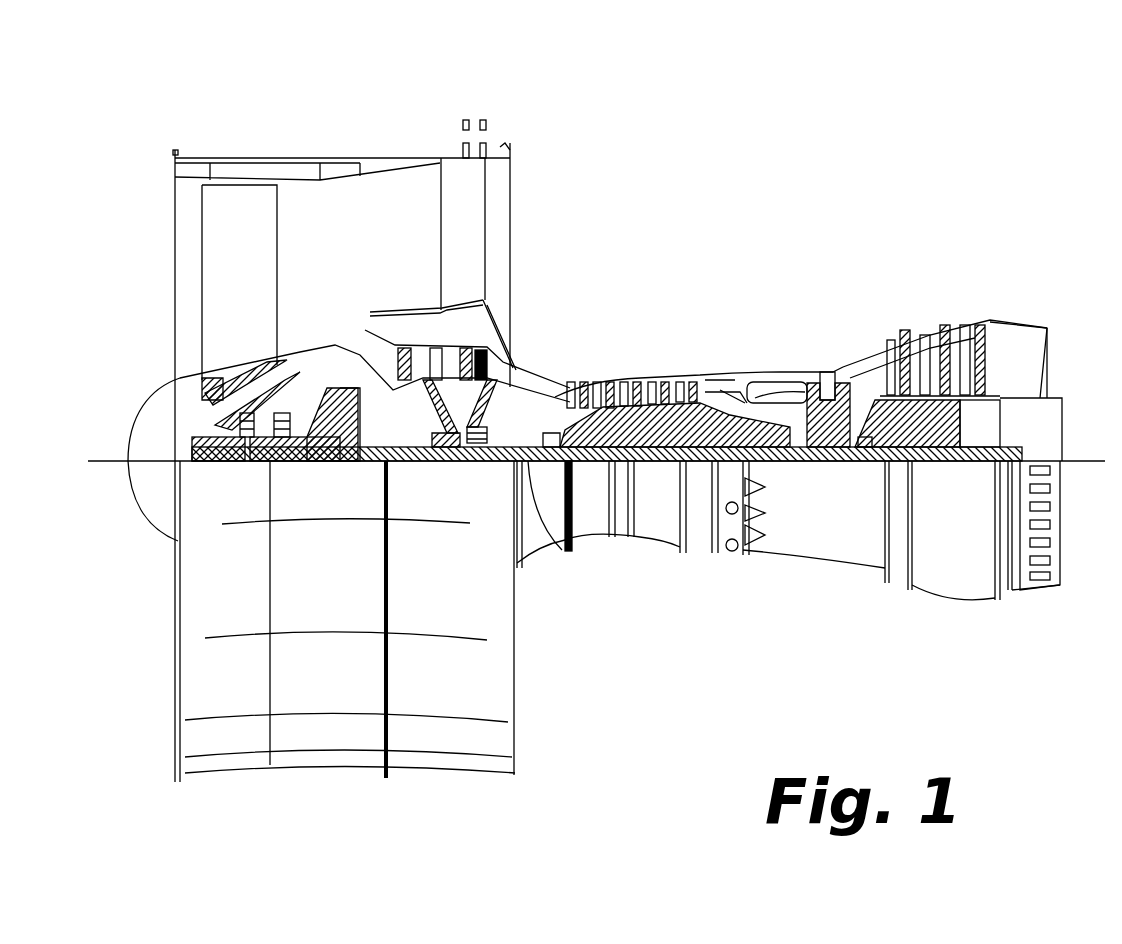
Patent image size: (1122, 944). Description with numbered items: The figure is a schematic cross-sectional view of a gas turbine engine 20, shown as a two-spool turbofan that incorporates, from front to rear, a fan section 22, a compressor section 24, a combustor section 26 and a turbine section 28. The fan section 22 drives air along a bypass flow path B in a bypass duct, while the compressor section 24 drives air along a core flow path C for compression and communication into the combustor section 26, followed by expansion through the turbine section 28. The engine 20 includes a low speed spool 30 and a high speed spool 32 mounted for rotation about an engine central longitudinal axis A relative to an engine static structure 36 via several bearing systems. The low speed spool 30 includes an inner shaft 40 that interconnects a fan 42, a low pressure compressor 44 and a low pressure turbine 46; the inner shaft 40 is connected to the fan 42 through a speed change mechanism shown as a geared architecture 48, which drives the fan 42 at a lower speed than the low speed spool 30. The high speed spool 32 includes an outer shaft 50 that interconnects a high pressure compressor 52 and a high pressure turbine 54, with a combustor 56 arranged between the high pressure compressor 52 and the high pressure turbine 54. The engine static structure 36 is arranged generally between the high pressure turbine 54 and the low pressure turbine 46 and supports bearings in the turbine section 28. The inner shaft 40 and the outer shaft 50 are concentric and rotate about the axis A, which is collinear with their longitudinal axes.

The gas turbine engine 20 is at (784, 190).
The fan section 22 is at (367, 123).
The compressor section 24 is at (735, 272).
The combustor section 26 is at (805, 272).
The turbine section 28 is at (808, 278).
The low speed spool 30 is at (662, 472).
The high speed spool 32 is at (714, 378).
The engine static structure 36 is at (702, 566).
The inner shaft 40 is at (567, 553).
The fan 42 is at (248, 299).
The low pressure compressor 44 is at (500, 312).
The low pressure turbine 46 is at (942, 327).
The geared architecture 48 is at (353, 462).
The outer shaft 50 is at (775, 452).
The high pressure compressor 52 is at (632, 392).
The high pressure turbine 54 is at (825, 373).
The combustor 56 is at (767, 393).
The engine central longitudinal axis A is at (1090, 456).
The bypass flow path B is at (392, 239).
The core flow path C is at (340, 348).